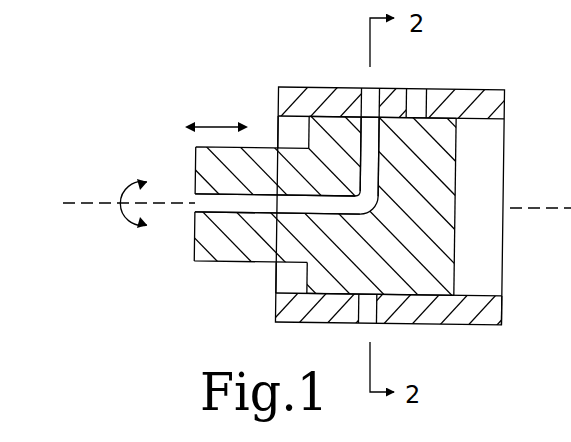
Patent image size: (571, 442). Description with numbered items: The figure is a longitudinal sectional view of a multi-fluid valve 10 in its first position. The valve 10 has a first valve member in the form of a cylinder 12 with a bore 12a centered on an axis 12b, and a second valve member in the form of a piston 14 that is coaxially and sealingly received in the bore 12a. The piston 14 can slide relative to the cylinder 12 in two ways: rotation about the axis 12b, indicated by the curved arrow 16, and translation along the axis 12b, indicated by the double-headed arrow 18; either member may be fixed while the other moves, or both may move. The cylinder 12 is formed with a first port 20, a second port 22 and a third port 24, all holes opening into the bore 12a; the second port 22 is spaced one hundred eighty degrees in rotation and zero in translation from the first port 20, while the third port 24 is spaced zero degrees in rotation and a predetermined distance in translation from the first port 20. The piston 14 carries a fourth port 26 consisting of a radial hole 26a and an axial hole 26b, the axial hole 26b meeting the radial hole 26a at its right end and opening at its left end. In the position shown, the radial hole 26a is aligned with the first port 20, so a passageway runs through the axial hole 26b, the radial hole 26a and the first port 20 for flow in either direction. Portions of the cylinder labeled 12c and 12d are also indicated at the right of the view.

The multi-fluid valve 10 is at (142, 88).
The cylinder 12 is at (489, 97).
The bore 12a is at (476, 120).
The axis 12b is at (88, 203).
The housing portion 12c is at (540, 239).
The housing portion 12d is at (536, 325).
The piston 14 is at (228, 255).
The arrow 16 is at (138, 179).
The arrow 18 is at (212, 126).
The first port 20 is at (364, 94).
The second port 22 is at (379, 298).
The third port 24 is at (418, 97).
The fourth port 26 is at (266, 135).
The radial hole 26a is at (375, 153).
The axial hole 26b is at (195, 207).